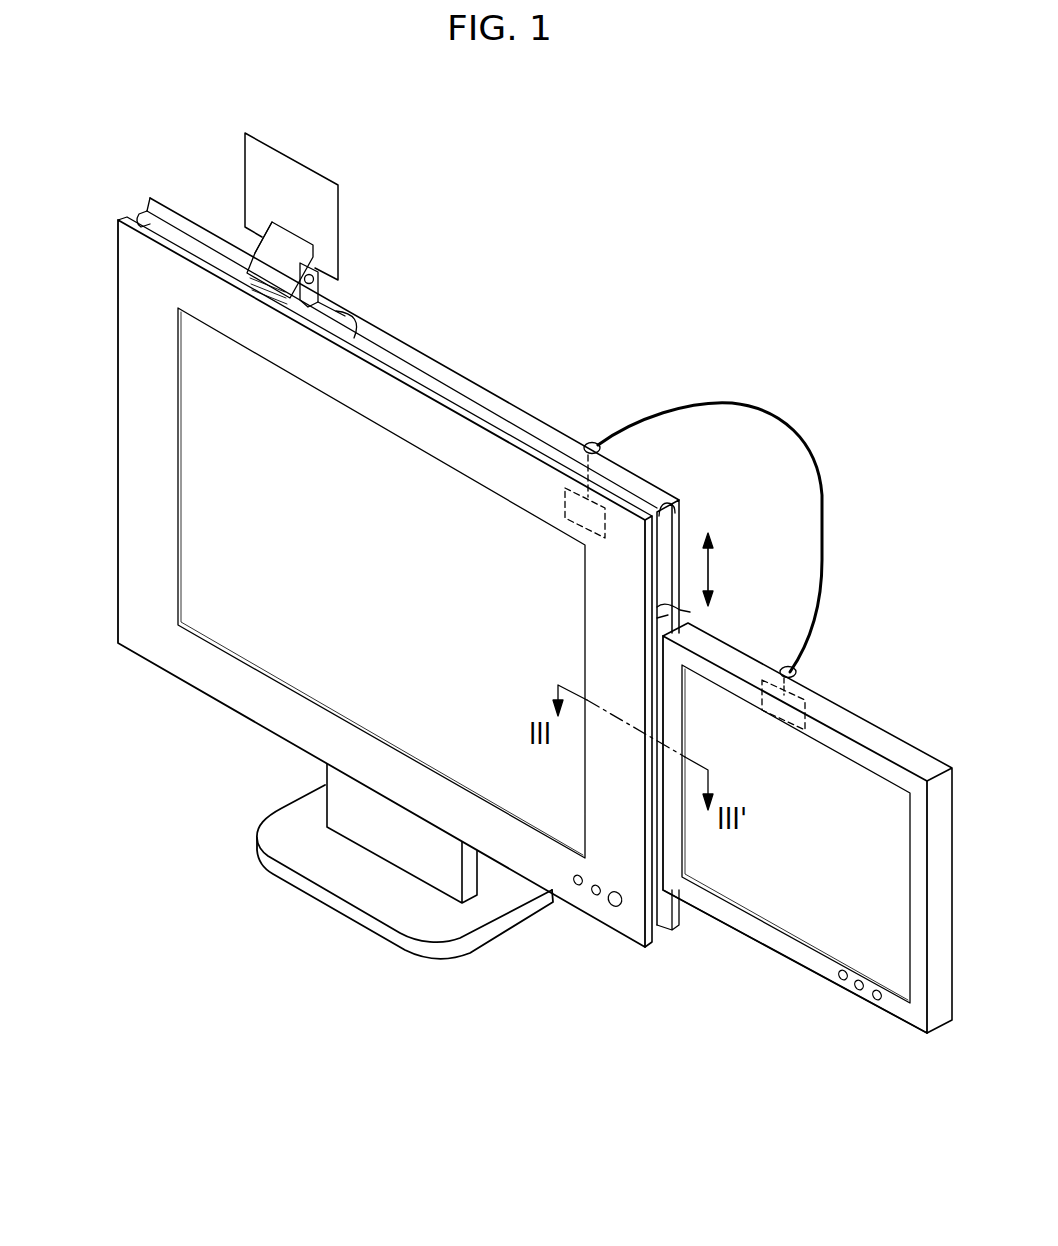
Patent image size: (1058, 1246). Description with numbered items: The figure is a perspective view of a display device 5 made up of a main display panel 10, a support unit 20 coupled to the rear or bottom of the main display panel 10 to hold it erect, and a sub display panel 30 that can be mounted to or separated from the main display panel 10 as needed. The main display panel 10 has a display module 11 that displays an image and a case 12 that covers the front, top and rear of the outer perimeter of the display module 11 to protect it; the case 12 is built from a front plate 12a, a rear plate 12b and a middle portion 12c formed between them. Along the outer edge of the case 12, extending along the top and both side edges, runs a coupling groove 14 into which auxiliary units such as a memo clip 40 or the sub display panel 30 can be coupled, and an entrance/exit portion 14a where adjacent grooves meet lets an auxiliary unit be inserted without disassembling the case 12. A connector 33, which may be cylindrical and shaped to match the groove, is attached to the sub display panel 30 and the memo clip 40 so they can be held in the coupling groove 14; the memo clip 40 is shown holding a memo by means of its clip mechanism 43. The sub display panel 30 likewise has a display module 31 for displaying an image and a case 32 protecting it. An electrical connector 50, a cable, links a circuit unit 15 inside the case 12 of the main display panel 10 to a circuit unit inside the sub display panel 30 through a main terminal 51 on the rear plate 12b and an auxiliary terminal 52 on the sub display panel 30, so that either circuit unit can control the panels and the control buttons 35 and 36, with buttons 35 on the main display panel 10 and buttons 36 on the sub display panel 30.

The display device 5 is at (590, 285).
The main display panel 10 is at (145, 526).
The display module 11 is at (210, 425).
The case 12 is at (138, 353).
The front plate 12a is at (127, 216).
The rear plate 12b is at (152, 198).
The middle portion 12c is at (146, 214).
The coupling groove 14 is at (525, 434).
The entrance/exit portion 14a is at (660, 508).
The circuit unit 15 is at (563, 500).
The support unit 20 is at (335, 807).
The sub display panel 30 is at (835, 695).
The display module 31 is at (793, 913).
The case 32 is at (913, 1013).
The connector 33 is at (690, 612).
The control buttons 35 is at (613, 905).
The control buttons 36 is at (847, 990).
The memo clip 40 is at (320, 273).
The hinge 43 is at (342, 318).
The electrical connector 50 is at (820, 452).
The main terminal 51 is at (595, 440).
The auxiliary terminal 52 is at (797, 668).